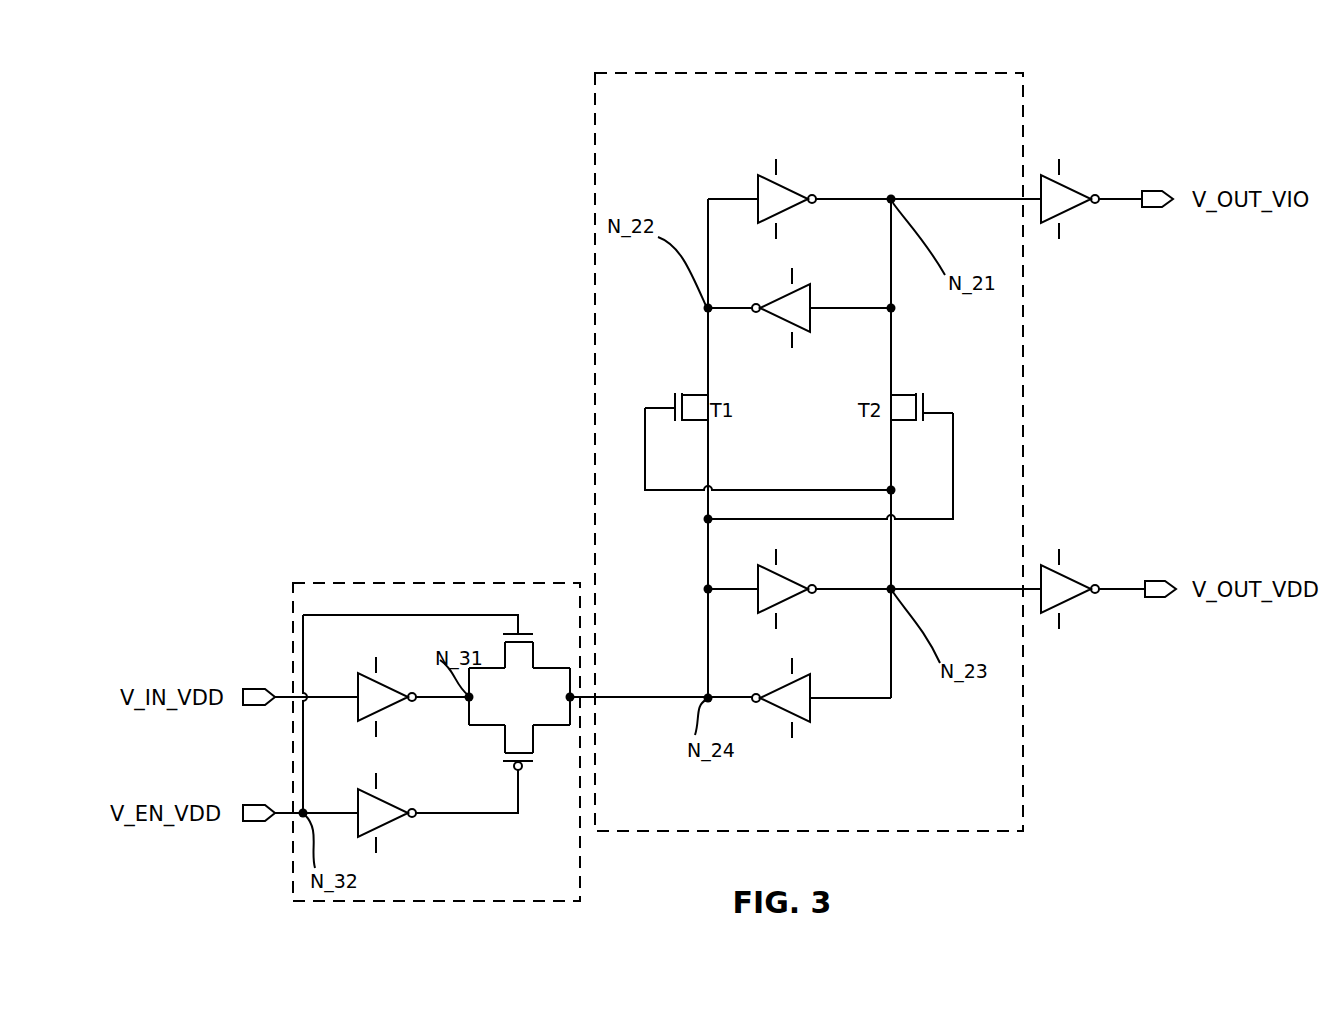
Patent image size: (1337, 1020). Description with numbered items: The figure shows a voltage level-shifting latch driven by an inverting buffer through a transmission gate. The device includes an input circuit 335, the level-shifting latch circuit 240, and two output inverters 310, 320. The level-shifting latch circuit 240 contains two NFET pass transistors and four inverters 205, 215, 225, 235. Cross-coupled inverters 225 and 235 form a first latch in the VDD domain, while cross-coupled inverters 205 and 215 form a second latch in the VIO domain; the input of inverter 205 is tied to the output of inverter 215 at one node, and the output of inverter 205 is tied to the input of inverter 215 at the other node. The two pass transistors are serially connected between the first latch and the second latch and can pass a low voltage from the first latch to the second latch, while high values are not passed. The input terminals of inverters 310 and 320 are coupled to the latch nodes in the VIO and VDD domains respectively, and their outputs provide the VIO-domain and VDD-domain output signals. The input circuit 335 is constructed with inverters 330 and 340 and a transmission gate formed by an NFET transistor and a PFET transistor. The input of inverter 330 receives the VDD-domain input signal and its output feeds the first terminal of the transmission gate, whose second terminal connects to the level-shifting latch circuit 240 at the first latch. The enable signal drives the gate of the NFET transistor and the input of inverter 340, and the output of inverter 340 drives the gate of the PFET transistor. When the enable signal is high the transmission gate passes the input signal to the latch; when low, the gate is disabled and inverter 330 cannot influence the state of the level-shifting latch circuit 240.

The inverter 205 is at (780, 187).
The inverter 215 is at (800, 332).
The inverter 225 is at (788, 604).
The inverter 235 is at (800, 720).
The level-shifting latch circuit 240 is at (594, 136).
The inverter 310 is at (1062, 183).
The inverter 320 is at (1068, 577).
The inverter 330 is at (403, 703).
The input circuit 335 is at (406, 583).
The inverter 340 is at (403, 820).